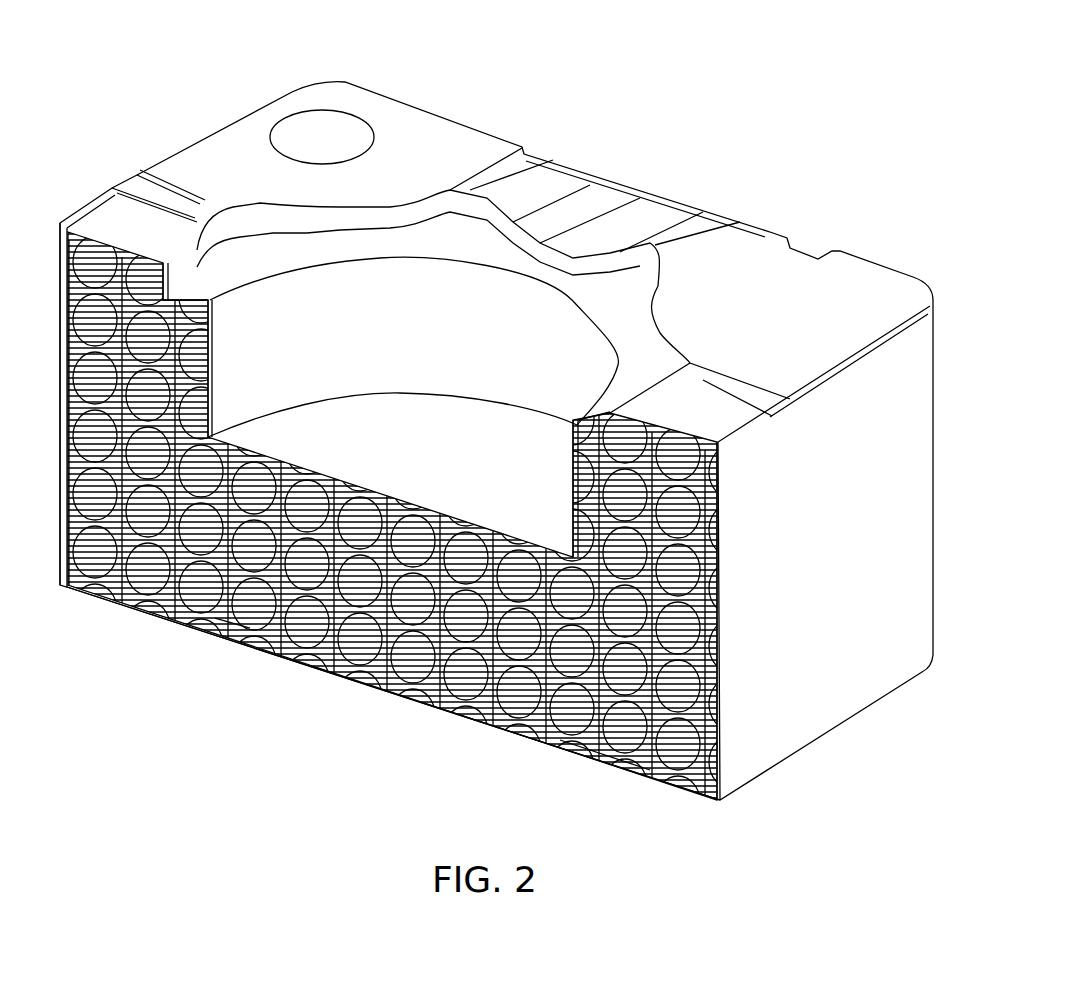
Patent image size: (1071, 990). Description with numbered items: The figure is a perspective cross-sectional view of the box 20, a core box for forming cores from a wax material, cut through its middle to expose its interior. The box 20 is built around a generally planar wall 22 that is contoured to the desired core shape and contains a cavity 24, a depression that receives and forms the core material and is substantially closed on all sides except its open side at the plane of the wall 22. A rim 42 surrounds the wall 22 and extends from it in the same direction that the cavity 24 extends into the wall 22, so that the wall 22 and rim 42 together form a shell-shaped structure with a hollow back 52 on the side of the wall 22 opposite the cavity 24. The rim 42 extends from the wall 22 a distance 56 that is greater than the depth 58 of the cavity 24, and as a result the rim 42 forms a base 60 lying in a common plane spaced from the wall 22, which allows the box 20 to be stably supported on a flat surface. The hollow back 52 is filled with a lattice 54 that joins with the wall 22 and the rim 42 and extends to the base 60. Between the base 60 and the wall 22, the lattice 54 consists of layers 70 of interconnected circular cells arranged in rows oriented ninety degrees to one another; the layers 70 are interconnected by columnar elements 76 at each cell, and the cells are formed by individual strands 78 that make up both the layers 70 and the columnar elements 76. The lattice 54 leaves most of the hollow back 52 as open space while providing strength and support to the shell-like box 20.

The box 20 is at (737, 97).
The wall 22 is at (233, 118).
The cavity 24 is at (443, 358).
The rim 42 is at (849, 563).
The hollow back 52 is at (105, 588).
The lattice 54 is at (375, 657).
The distance 56 is at (30, 222).
The depth 58 is at (210, 300).
The base 60 is at (724, 793).
The layers 70 is at (690, 536).
The columnar elements 76 is at (597, 733).
The strands 78 is at (248, 616).